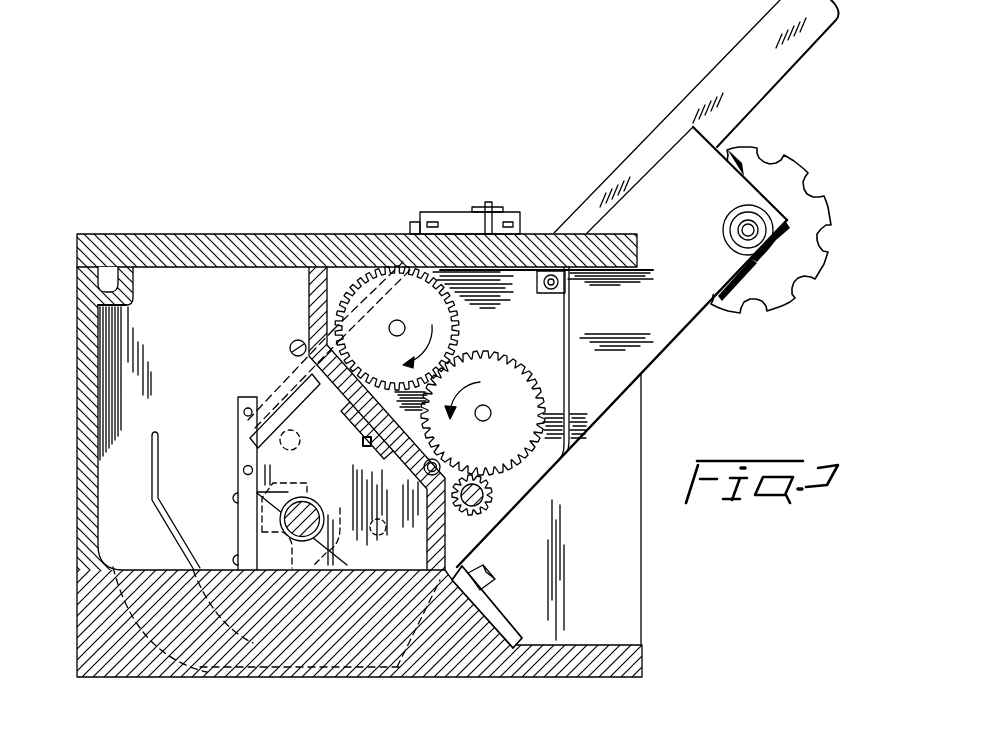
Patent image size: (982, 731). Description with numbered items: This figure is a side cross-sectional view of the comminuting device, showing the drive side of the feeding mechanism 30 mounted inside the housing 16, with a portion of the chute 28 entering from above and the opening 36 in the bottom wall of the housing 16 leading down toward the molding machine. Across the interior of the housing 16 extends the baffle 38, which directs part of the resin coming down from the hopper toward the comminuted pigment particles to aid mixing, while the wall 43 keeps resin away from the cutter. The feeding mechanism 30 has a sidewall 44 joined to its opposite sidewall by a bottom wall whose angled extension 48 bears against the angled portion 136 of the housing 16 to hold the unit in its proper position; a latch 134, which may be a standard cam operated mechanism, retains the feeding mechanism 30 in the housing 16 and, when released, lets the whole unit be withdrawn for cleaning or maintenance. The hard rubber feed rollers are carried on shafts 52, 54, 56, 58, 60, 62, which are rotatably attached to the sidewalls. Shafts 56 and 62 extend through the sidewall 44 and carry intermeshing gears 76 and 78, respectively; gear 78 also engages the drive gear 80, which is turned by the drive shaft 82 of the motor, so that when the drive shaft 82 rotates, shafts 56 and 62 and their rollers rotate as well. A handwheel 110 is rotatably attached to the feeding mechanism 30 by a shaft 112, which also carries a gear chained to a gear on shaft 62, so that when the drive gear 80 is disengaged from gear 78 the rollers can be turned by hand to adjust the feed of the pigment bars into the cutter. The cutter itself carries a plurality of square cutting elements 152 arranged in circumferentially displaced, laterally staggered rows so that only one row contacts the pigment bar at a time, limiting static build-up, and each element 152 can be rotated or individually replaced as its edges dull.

The housing 16 is at (78, 411).
The chute 28 is at (725, 76).
The feeding mechanism 30 is at (654, 357).
The opening 36 is at (205, 682).
The baffle 38 is at (150, 498).
The wall 43 is at (260, 367).
The sidewall 44 is at (678, 303).
The angled extension 48 is at (517, 642).
The shaft 52 is at (236, 393).
The shaft 54 is at (337, 372).
The shaft 56 is at (390, 325).
The shaft 58 is at (378, 535).
The shaft 60 is at (457, 565).
The shaft 62 is at (490, 413).
The gear 76 is at (374, 285).
The gear 78 is at (518, 443).
The drive gear 80 is at (497, 531).
The drive shaft 82 is at (493, 505).
The handwheel 110 is at (823, 205).
The shaft 112 is at (752, 234).
The latch 134 is at (460, 206).
The angled portion 136 is at (303, 537).
The cutting elements 152 is at (290, 556).